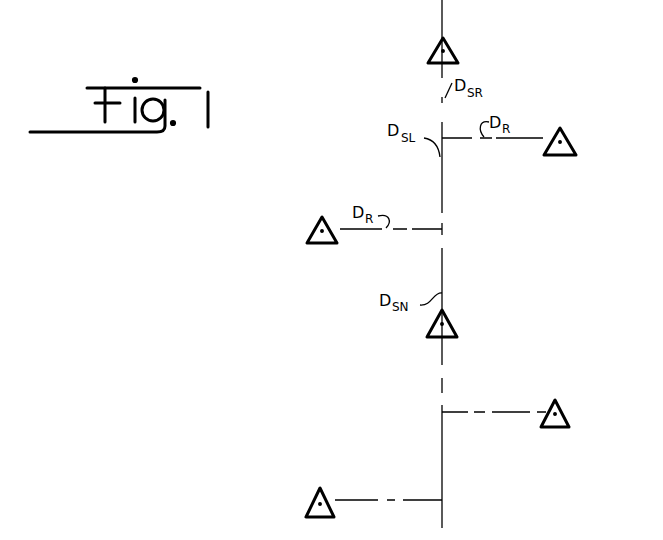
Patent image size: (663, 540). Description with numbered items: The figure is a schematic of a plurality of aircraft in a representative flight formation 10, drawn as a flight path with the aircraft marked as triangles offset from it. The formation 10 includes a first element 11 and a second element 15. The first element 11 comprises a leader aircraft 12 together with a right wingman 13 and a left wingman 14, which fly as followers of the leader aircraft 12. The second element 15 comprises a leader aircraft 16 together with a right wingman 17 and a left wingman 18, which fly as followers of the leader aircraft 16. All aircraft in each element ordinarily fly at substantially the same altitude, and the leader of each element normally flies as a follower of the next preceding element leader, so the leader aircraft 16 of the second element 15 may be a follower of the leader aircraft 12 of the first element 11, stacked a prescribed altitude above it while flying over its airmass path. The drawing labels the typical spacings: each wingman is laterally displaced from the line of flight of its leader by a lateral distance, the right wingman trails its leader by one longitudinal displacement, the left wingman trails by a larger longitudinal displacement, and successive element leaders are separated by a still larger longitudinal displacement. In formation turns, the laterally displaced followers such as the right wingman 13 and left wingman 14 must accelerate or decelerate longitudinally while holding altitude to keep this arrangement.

The formation 10 is at (335, 343).
The first element 11 is at (539, 79).
The leader aircraft 12 is at (455, 50).
The right wingman 13 is at (577, 143).
The left wingman 14 is at (313, 228).
The second element 15 is at (334, 413).
The leader aircraft 16 is at (452, 326).
The right wingman 17 is at (560, 408).
The left wingman 18 is at (312, 497).